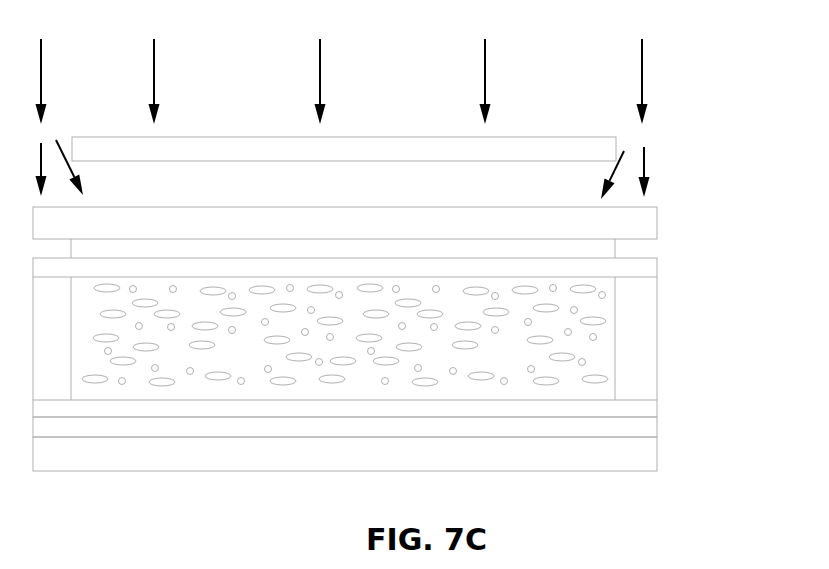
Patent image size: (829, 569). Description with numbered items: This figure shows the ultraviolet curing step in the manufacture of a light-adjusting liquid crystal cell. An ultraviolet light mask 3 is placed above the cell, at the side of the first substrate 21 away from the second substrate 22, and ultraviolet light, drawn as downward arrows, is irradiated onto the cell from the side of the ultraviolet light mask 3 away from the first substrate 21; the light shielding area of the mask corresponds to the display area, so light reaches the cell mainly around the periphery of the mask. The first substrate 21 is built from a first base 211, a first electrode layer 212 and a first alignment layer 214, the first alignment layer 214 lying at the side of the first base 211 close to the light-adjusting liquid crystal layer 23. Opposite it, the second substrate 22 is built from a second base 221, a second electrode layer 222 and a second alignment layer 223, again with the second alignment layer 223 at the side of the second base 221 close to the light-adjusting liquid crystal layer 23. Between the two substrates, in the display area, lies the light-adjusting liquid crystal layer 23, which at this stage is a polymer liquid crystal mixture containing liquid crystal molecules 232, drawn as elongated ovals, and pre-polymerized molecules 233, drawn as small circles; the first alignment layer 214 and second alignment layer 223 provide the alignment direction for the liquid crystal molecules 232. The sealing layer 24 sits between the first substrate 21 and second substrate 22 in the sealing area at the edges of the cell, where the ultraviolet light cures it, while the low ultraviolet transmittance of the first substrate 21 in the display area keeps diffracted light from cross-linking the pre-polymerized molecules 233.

The ultraviolet light mask 3 is at (547, 157).
The first substrate 21 is at (401, 244).
The first base 211 is at (640, 223).
The first electrode layer 212 is at (601, 252).
The first alignment layer 214 is at (633, 272).
The sealing layer 24 is at (639, 300).
The light-adjusting liquid crystal layer 23 is at (394, 335).
The pre-polymerized molecules 233 is at (593, 335).
The liquid crystal molecules 232 is at (592, 380).
The second substrate 22 is at (397, 435).
The second alignment layer 223 is at (627, 407).
The second electrode layer 222 is at (627, 428).
The second base 221 is at (630, 457).